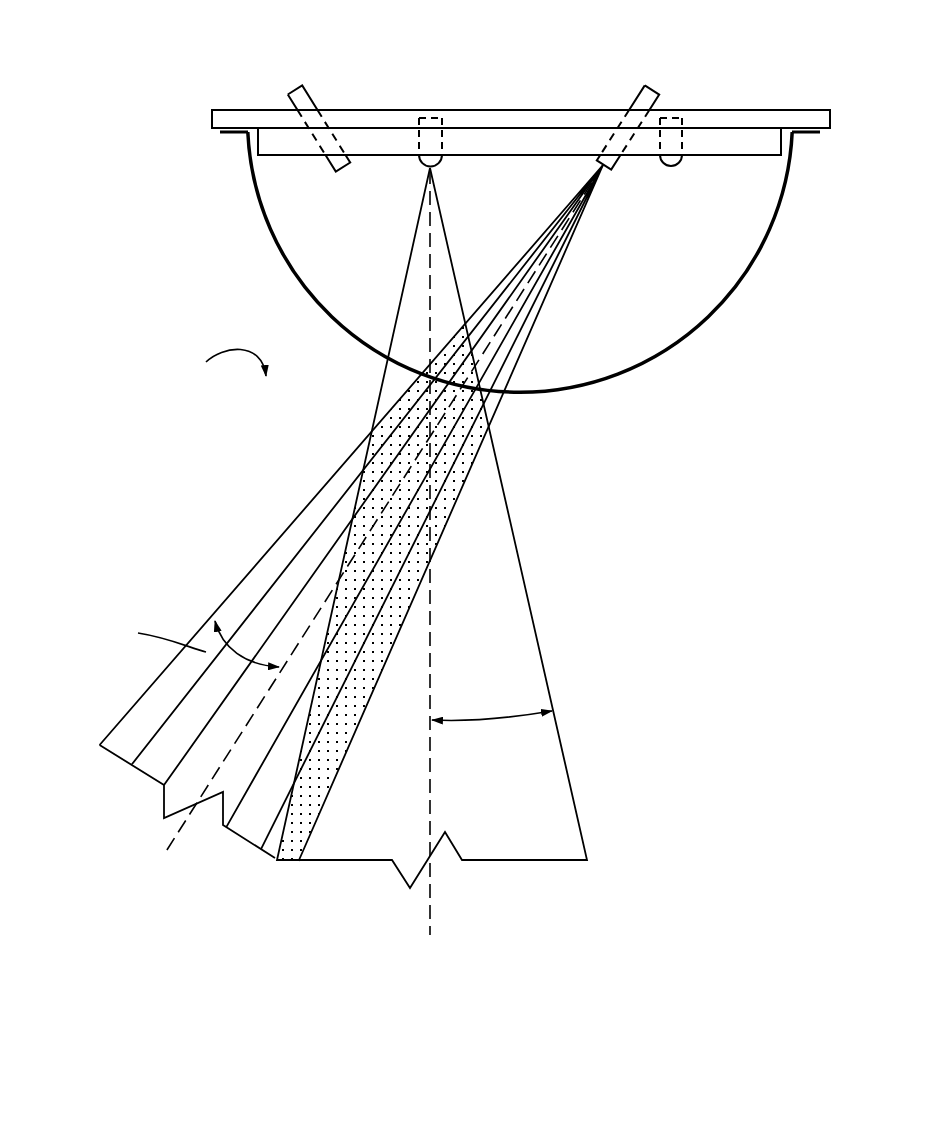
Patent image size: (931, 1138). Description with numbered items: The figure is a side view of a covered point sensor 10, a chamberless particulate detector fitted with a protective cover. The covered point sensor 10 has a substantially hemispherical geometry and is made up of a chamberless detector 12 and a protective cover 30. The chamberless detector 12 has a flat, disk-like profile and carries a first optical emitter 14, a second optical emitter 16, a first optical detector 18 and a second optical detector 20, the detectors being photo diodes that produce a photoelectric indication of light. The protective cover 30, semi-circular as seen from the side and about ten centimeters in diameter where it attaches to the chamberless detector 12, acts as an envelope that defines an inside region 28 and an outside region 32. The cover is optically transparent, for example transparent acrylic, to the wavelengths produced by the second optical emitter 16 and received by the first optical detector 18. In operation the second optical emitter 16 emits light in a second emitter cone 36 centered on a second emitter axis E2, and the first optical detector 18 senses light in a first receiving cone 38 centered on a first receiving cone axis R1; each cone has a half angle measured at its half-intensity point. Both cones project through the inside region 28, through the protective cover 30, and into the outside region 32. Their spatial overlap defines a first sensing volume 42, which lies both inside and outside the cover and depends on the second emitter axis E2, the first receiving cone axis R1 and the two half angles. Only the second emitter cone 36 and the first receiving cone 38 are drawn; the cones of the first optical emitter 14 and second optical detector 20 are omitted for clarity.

The covered point sensor 10 is at (124, 93).
The chamberless detector 12 is at (516, 108).
The first optical emitter 14 is at (304, 88).
The second optical emitter 16 is at (626, 86).
The first optical detector 18 is at (440, 170).
The second optical detector 20 is at (672, 172).
The inside region 28 is at (313, 213).
The protective cover 30 is at (285, 250).
The outside region 32 is at (215, 367).
The second emitter cone 36 is at (545, 315).
The first receiving cone 38 is at (392, 320).
The first sensing volume 42 is at (393, 467).
The second emitter axis E2 is at (368, 523).
The first receiving cone axis R1 is at (428, 572).